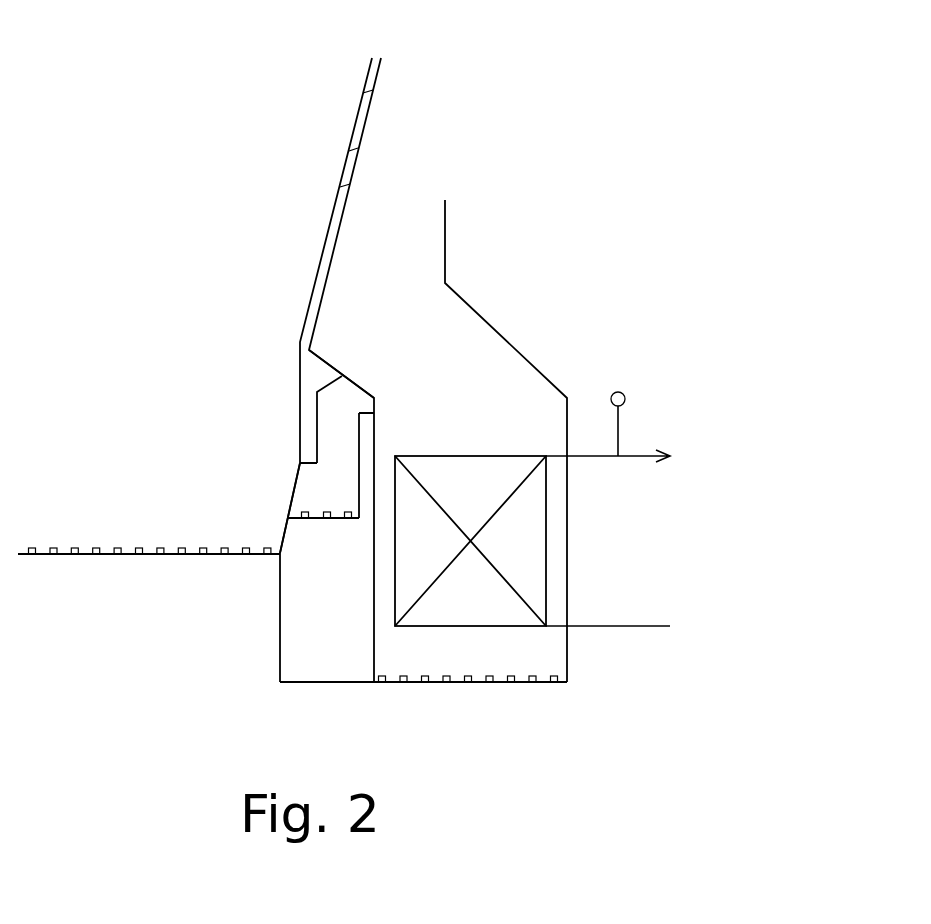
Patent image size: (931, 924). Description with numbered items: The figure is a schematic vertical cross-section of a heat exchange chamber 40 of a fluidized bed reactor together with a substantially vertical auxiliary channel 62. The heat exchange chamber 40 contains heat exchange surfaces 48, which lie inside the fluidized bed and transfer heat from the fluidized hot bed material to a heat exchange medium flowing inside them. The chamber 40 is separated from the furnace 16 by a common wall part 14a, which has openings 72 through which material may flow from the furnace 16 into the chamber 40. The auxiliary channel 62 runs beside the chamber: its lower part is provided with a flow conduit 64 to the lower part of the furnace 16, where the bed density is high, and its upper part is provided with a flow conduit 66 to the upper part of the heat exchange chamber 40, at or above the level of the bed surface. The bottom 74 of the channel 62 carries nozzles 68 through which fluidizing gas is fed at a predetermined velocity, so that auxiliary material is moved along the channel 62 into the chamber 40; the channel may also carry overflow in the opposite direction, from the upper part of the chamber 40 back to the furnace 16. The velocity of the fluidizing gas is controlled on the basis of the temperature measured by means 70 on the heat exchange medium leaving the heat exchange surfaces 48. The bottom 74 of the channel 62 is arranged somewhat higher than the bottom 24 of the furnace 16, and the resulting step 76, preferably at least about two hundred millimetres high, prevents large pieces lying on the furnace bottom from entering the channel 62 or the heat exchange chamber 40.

The furnace 16 is at (63, 243).
The wall part 14a is at (320, 275).
The openings 72 is at (355, 150).
The auxiliary channel 62 is at (335, 418).
The flow conduit 66 is at (358, 388).
The flow conduit 64 is at (302, 483).
The nozzles 68 is at (325, 522).
The bottom 74 is at (290, 512).
The step 76 is at (283, 530).
The heat exchange chamber 40 is at (527, 388).
The temperature measuring means 70 is at (618, 428).
The heat exchange surfaces 48 is at (530, 577).
The bottom of the furnace 24 is at (148, 554).